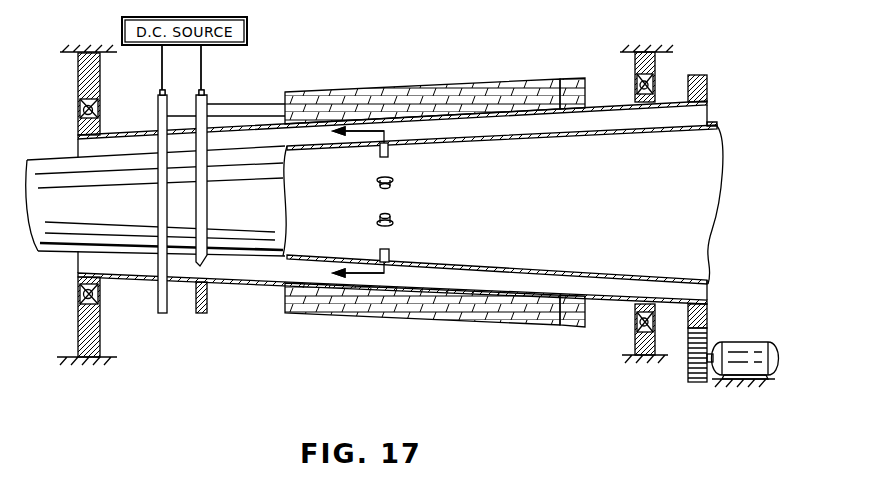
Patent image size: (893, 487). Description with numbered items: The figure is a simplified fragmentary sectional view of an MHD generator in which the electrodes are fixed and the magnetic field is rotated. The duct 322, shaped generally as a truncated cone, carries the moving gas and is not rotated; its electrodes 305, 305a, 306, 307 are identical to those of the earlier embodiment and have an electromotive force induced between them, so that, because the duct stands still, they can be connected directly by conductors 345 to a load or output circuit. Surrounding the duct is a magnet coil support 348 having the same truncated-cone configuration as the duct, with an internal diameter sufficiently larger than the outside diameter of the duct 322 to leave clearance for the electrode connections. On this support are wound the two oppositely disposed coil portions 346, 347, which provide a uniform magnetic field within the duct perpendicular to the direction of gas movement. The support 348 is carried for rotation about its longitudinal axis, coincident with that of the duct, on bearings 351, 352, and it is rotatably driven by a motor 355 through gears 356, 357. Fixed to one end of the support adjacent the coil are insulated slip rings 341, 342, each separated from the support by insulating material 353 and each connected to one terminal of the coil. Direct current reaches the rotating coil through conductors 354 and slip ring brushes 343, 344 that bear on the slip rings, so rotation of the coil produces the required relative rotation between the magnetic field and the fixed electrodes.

The duct 322 is at (567, 136).
The electrode 305 is at (391, 152).
The electrode 305a is at (391, 252).
The electrode 306 is at (394, 184).
The electrode 307 is at (396, 218).
The slip ring 341 is at (163, 313).
The slip ring 342 is at (203, 313).
The slip ring brush 343 is at (160, 92).
The slip ring brush 344 is at (204, 92).
The conductors 345 is at (365, 134).
The coil portion 346 is at (438, 86).
The coil portion 347 is at (491, 328).
The magnet coil support 348 is at (588, 104).
The bearing 351 is at (100, 297).
The bearing 352 is at (652, 87).
The insulating material 353 is at (209, 298).
The conductors 354 is at (201, 55).
The motor 355 is at (732, 343).
The gear 356 is at (688, 367).
The gear 357 is at (708, 85).